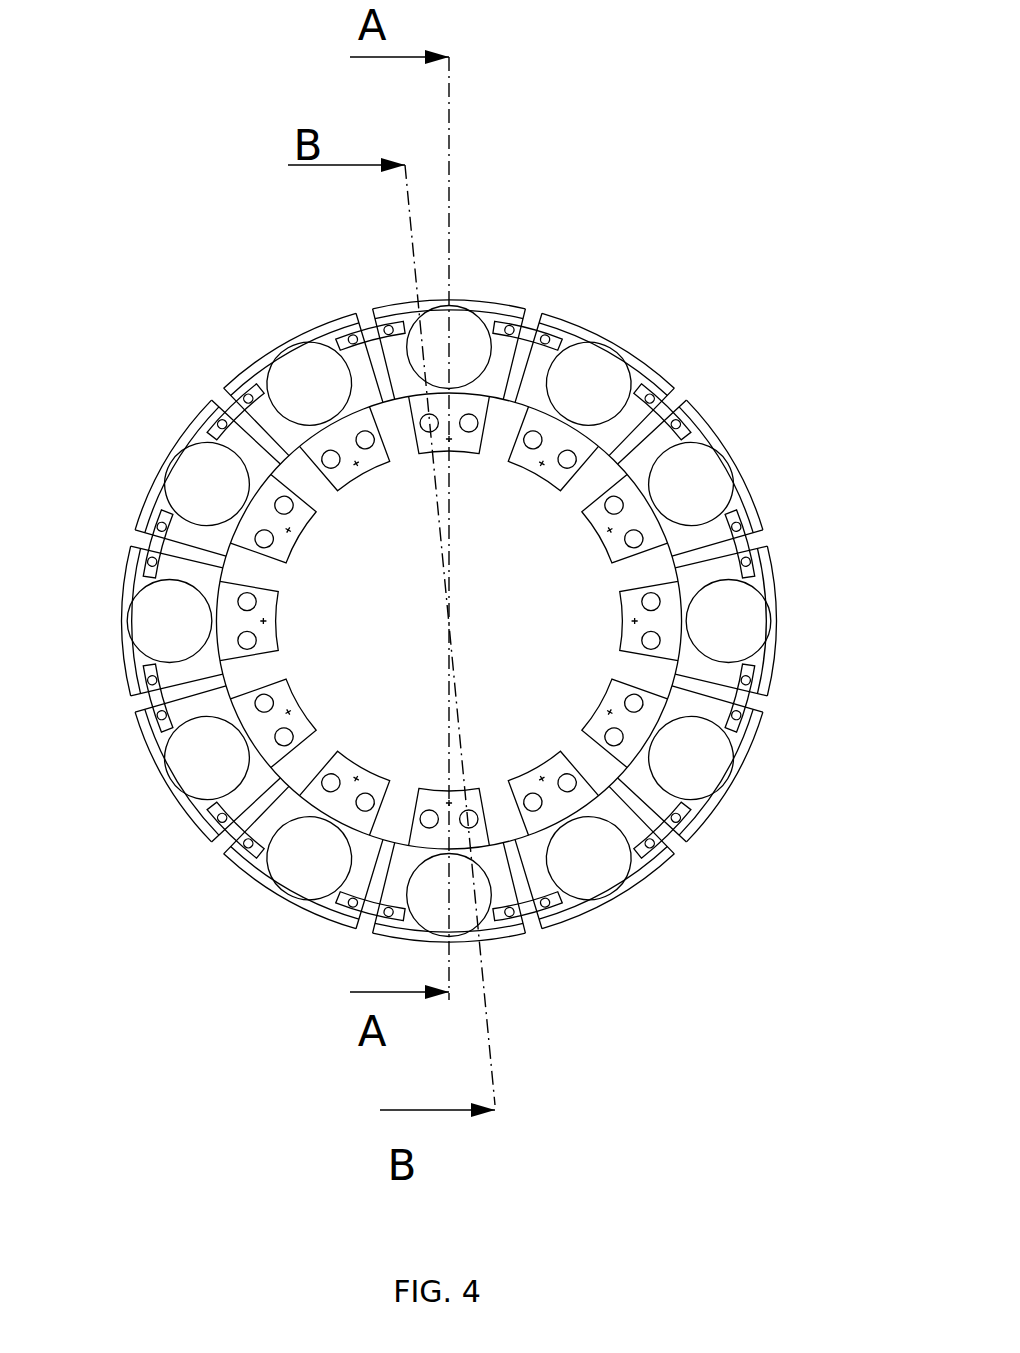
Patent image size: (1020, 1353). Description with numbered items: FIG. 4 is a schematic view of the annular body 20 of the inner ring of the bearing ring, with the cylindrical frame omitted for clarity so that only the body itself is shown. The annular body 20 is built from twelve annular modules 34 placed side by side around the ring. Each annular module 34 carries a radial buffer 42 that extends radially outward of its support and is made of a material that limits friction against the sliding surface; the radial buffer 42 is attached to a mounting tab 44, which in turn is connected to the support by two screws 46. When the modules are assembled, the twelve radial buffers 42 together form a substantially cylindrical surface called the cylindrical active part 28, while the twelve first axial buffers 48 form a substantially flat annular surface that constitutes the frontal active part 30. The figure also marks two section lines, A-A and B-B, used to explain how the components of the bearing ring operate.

The annular body 20 is at (124, 335).
The cylindrical active part 28 is at (511, 297).
The frontal active part 30 is at (594, 373).
The annular module 34 is at (740, 463).
The radial buffer 42 is at (478, 300).
The mounting tab 44 is at (253, 380).
The screw 46 is at (383, 318).
The first axial buffer 48 is at (433, 345).